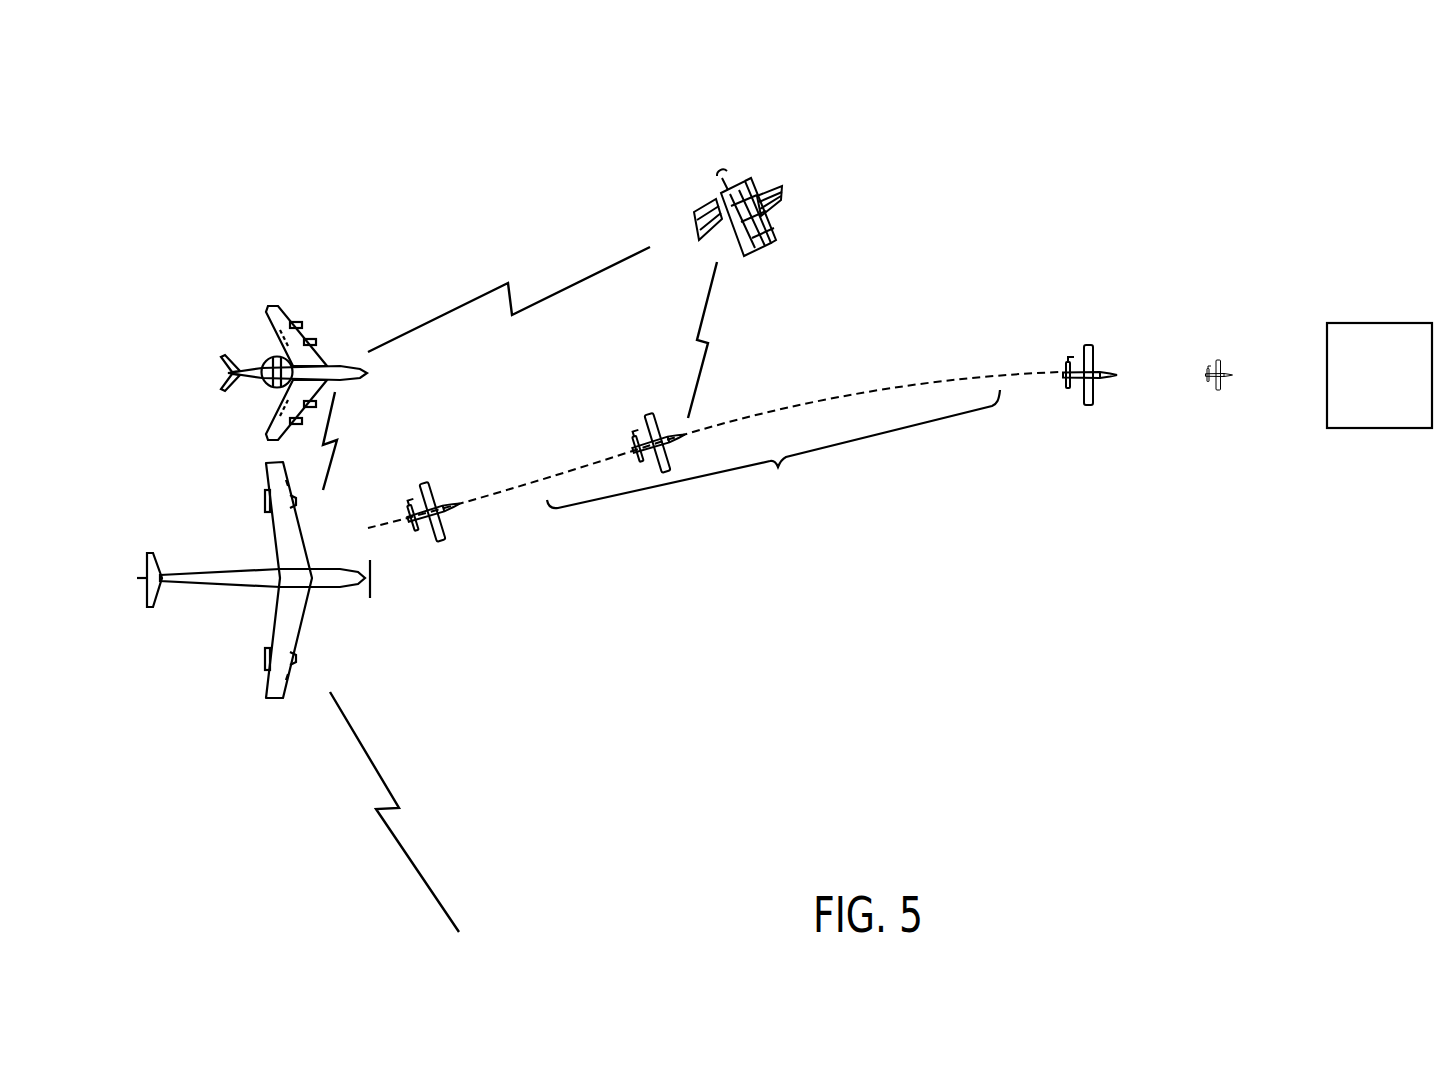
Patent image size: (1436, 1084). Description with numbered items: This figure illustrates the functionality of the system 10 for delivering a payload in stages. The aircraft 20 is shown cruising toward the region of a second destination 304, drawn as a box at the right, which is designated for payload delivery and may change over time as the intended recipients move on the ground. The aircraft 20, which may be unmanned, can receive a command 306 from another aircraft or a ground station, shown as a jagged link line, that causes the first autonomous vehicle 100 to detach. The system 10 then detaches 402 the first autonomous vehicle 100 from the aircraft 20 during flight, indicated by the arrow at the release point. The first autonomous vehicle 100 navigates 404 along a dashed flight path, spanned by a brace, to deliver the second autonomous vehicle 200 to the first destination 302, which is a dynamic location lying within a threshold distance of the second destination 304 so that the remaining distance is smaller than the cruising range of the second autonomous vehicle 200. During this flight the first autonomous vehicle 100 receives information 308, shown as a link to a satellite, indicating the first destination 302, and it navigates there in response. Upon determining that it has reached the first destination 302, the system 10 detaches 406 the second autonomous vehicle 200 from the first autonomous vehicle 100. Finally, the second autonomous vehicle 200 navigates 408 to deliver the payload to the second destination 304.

The system 10 is at (382, 146).
The aircraft 20 is at (290, 638).
The first autonomous vehicle 100 is at (446, 521).
The second autonomous vehicle 200 is at (1225, 380).
The first destination 302 is at (1080, 333).
The second destination 304 is at (1376, 406).
The command 306 is at (338, 833).
The information 308 is at (712, 307).
The detaching the first autonomous vehicle 402 is at (420, 562).
The navigating the first autonomous vehicle 404 is at (714, 450).
The detaching the second autonomous vehicle 406 is at (1111, 415).
The navigating the second autonomous vehicle 408 is at (1218, 340).